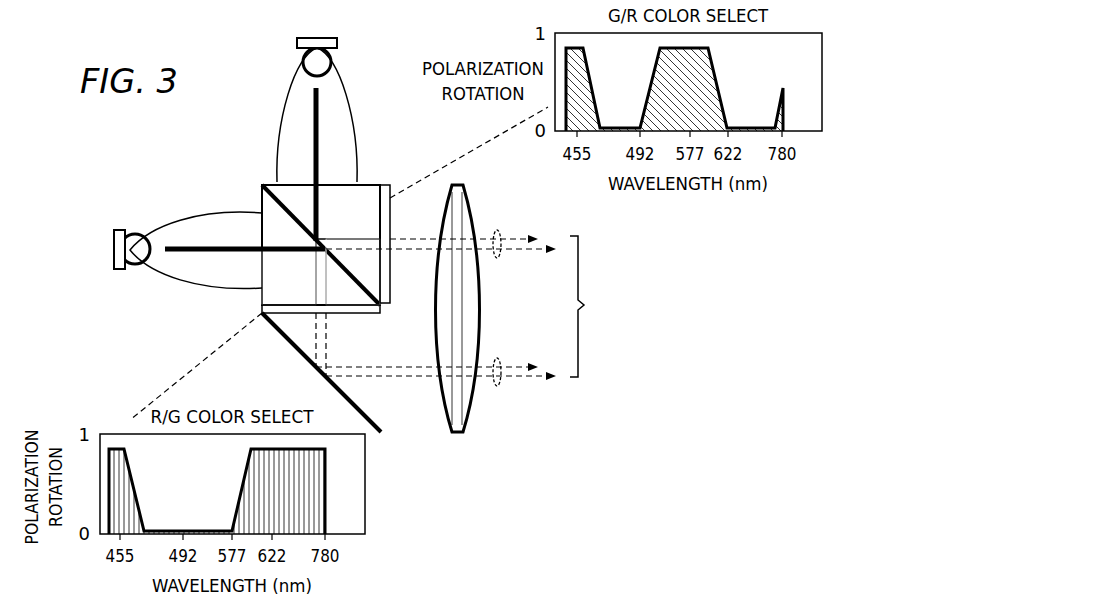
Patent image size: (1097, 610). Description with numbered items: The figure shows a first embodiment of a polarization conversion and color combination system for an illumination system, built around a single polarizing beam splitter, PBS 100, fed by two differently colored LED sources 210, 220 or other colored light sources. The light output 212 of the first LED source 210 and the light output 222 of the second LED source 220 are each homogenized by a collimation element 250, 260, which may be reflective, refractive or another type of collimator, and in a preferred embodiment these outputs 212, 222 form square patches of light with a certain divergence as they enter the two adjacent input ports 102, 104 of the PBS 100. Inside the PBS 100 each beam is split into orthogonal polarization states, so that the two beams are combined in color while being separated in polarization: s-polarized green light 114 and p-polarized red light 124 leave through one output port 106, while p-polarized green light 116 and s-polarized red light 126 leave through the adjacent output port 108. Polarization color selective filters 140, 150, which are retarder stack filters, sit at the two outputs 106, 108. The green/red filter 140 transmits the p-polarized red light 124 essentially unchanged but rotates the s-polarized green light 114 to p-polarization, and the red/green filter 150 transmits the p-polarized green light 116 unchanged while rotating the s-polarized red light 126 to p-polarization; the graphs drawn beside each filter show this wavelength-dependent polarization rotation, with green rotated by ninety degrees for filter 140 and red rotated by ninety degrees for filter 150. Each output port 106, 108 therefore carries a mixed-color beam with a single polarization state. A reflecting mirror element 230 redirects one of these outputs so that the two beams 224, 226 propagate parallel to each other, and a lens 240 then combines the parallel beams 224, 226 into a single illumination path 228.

The PBS 100 is at (244, 186).
The port 102 is at (293, 182).
The port 104 is at (272, 280).
The port 106 is at (383, 215).
The port 108 is at (357, 316).
The s-polarized green light 114 is at (362, 238).
The p-polarized green light 116 is at (300, 287).
The p-polarized red light 124 is at (352, 254).
The s-polarized red light 126 is at (340, 313).
The color selective filter 140 is at (385, 185).
The color selective filter 150 is at (368, 312).
The LED source 210 is at (297, 43).
The light output 212 is at (314, 117).
The LED source 220 is at (114, 246).
The light output 222 is at (183, 247).
The beam 224 is at (497, 230).
The beam 226 is at (497, 388).
The illumination path 228 is at (596, 306).
The reflecting mirror element 230 is at (302, 354).
The lens 240 is at (480, 313).
The collimation element 250 is at (285, 88).
The collimation element 260 is at (165, 282).